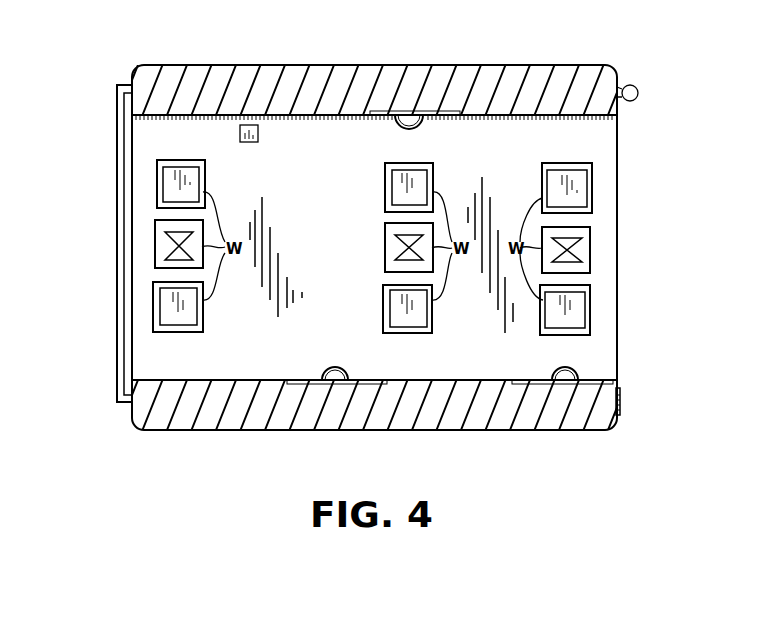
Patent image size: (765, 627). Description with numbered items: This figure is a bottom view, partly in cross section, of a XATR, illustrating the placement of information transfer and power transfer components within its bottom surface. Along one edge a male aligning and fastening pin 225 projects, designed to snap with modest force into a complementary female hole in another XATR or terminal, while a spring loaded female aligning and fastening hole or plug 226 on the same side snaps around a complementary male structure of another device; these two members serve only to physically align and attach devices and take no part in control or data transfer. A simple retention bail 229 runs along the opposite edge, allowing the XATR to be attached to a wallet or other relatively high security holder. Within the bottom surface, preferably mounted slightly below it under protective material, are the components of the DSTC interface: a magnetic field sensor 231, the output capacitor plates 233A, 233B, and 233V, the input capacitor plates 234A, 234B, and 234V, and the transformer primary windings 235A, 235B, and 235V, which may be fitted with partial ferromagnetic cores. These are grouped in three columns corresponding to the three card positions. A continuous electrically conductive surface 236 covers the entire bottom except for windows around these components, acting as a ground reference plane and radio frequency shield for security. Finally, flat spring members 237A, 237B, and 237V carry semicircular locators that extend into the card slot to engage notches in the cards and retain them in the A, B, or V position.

The element XATR is at (337, 60).
The male aligning and fastening pin 225 is at (638, 103).
The female aligning and fastening hole or plug 226 is at (623, 397).
The retention bail 229 is at (118, 118).
The magnetic field sensor 231 is at (258, 133).
The output capacitor plate 233A is at (175, 183).
The output capacitor plate 233B is at (402, 187).
The output capacitor plate 233V is at (578, 310).
The input capacitor plate 234A is at (172, 305).
The input capacitor plate 234B is at (402, 307).
The input capacitor plate 234V is at (580, 190).
The transformer primary winding 235A is at (178, 247).
The transformer primary winding 235B is at (410, 247).
The transformer primary winding 235V is at (548, 248).
The continuous electrically conductive surface 236 is at (143, 348).
The flat spring member 237A is at (326, 371).
The flat spring member 237B is at (557, 371).
The flat spring member 237V is at (418, 128).